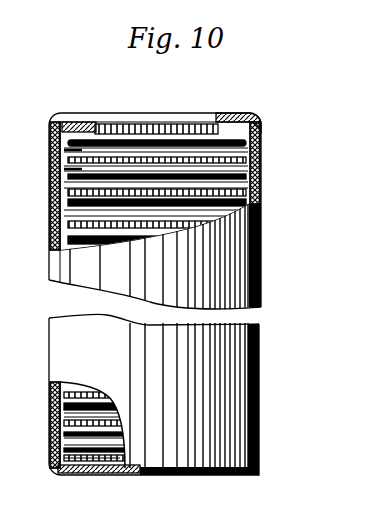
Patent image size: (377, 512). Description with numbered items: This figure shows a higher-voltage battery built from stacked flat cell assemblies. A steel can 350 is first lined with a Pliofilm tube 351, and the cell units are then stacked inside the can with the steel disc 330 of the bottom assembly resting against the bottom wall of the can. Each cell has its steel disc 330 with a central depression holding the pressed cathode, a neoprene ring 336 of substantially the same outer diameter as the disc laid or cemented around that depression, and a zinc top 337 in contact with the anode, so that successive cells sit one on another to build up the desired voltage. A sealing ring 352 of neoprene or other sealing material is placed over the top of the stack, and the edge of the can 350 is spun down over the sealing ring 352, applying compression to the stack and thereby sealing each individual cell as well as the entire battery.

The steel disc 330 is at (64, 169).
The neoprene ring 336 is at (64, 150).
The zinc top 337 is at (131, 142).
The steel can 350 is at (258, 263).
The Pliofilm tube 351 is at (259, 197).
The sealing ring 352 is at (222, 132).